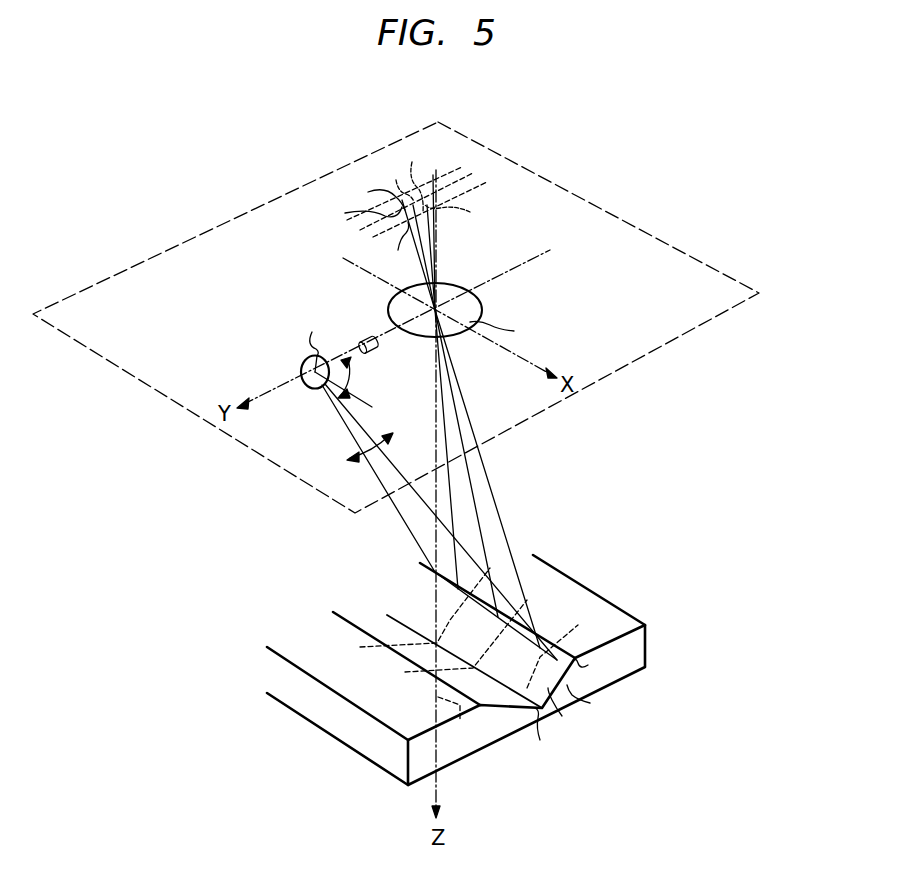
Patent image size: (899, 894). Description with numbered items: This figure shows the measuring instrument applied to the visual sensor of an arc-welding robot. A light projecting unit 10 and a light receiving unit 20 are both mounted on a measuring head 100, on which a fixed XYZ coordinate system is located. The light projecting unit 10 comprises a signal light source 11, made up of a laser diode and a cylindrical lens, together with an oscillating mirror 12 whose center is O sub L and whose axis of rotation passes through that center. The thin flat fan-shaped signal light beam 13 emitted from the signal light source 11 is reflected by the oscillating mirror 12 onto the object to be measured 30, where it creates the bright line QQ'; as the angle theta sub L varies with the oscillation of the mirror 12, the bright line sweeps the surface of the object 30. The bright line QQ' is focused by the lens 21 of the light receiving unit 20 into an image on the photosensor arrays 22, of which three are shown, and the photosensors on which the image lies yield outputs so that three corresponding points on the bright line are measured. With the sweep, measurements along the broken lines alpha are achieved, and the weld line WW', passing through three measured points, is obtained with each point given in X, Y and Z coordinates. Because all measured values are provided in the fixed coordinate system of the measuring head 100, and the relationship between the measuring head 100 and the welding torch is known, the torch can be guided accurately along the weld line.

The light projecting unit 10 is at (303, 362).
The signal light source 11 is at (363, 338).
The oscillating mirror 12 is at (315, 389).
The signal light beam 13 is at (376, 476).
The light receiving unit 20 is at (488, 274).
The lens 21 is at (482, 309).
The photosensor arrays 22 is at (549, 172).
The object to be measured 30 is at (368, 747).
The measuring head 100 is at (92, 350).